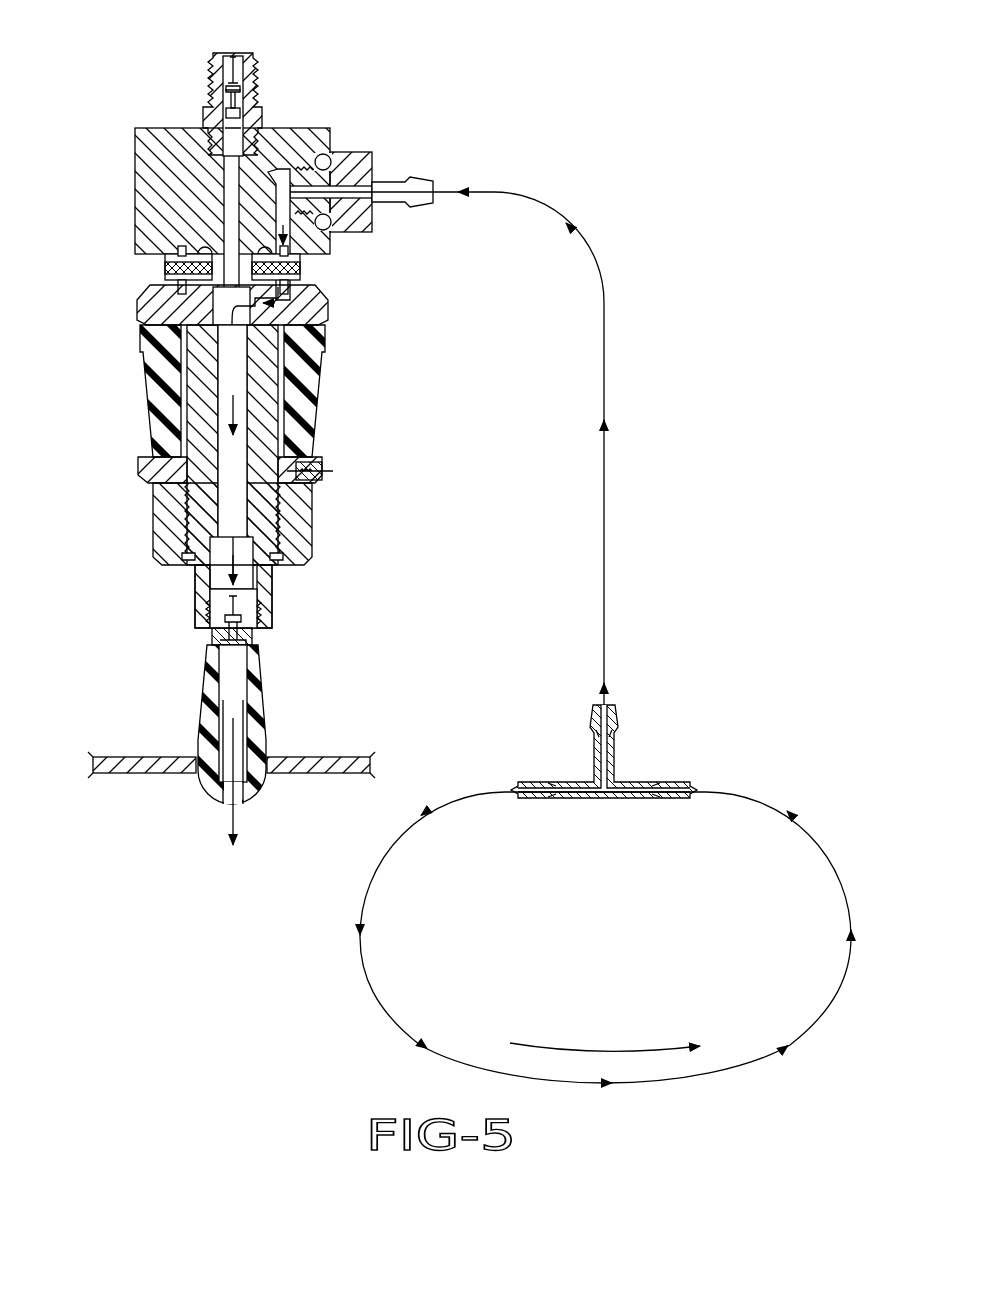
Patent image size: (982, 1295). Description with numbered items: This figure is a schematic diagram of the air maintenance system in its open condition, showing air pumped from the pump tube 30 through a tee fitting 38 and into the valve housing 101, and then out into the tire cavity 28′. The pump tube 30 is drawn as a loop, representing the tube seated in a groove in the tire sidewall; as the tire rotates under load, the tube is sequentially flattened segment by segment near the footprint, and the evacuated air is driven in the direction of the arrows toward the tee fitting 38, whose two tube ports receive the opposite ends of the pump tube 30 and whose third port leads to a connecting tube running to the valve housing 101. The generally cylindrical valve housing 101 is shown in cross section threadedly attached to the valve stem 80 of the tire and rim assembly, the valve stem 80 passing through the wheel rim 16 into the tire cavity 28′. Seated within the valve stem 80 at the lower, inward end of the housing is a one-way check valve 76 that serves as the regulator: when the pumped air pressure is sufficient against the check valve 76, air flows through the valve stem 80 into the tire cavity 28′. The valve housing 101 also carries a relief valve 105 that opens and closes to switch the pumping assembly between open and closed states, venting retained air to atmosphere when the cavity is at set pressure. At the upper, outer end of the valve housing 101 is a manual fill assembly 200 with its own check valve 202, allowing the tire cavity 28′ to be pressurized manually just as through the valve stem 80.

The valve housing 101 is at (90, 108).
The manual fill assembly 200 is at (270, 62).
The check valve 202 is at (238, 85).
The relief valve 105 is at (318, 462).
The one-way check valve 76 is at (230, 623).
The valve stem 80 is at (257, 697).
The wheel rim 16 is at (168, 762).
The tire cavity 28′ is at (168, 848).
The pump tube 30 is at (470, 793).
The tee fitting 38 is at (642, 760).